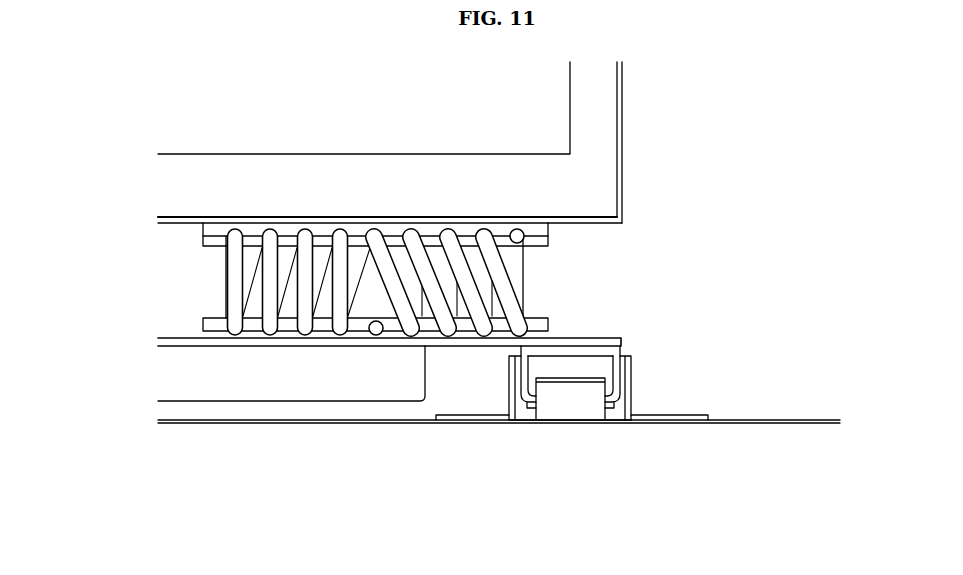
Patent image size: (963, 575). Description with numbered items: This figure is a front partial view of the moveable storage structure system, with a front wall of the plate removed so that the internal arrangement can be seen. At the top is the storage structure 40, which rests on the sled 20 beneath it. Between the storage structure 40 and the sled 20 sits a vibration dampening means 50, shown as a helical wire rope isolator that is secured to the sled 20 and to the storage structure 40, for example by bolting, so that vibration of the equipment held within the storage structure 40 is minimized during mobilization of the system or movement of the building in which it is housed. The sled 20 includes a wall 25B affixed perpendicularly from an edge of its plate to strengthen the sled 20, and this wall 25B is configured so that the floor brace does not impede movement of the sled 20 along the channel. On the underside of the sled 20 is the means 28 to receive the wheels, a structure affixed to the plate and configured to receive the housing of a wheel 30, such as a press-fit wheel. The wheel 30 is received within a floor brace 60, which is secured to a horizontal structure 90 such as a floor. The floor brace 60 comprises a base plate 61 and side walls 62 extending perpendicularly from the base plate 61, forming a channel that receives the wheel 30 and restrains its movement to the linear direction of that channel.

The storage structure 40 is at (236, 164).
The vibration dampening means 50 is at (226, 270).
The sled 20 is at (172, 346).
The wall 25B is at (280, 380).
The means to receive the wheels 28 is at (523, 369).
The wheel 30 is at (567, 400).
The floor brace 60 is at (632, 421).
The base plate 61 is at (502, 413).
The side wall 62 is at (629, 397).
The horizontal structure 90 is at (767, 421).